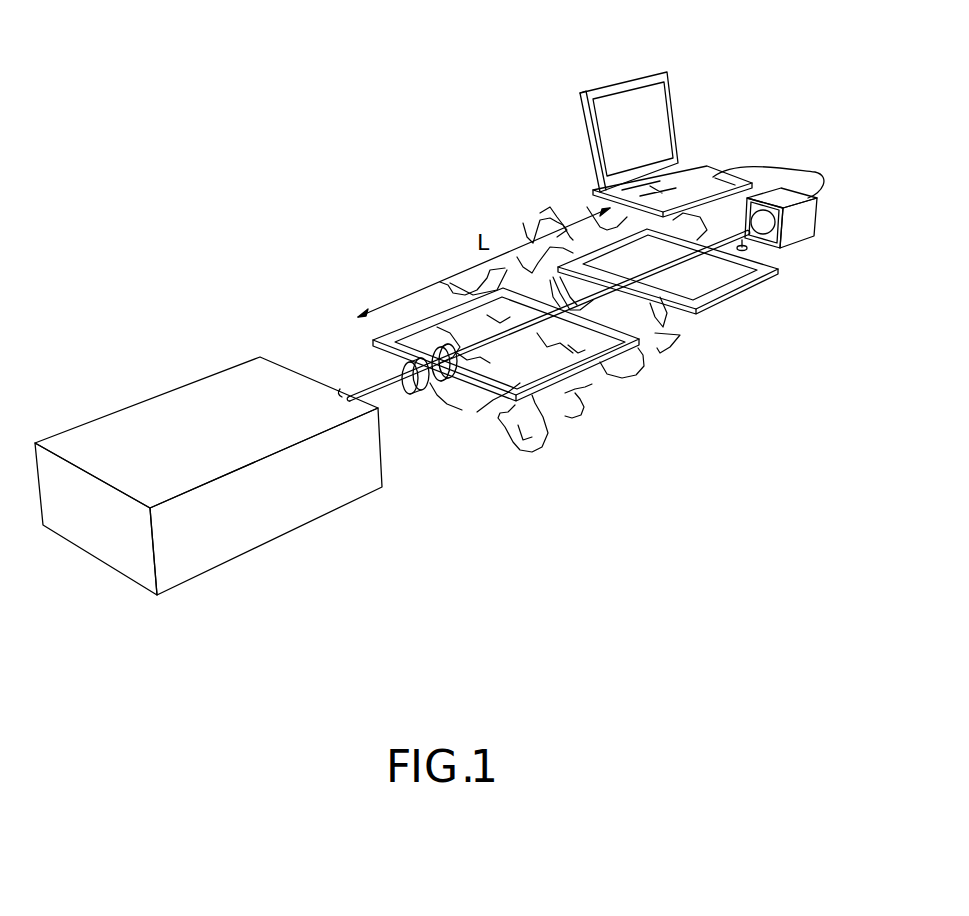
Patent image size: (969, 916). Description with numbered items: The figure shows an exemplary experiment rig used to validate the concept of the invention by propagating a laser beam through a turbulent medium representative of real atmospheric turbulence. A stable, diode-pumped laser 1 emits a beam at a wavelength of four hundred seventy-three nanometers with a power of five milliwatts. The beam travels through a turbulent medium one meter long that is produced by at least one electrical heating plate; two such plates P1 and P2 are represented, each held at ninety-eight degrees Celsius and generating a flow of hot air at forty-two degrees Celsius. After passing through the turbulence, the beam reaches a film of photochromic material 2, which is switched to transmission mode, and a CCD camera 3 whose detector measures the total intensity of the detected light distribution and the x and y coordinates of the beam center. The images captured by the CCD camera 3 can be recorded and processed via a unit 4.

The laser 1 is at (165, 418).
The film of photochromic material 2 is at (773, 248).
The CCD camera 3 is at (818, 210).
The unit 4 is at (623, 110).
The electrical heating plate P1 is at (585, 412).
The electrical heating plate P2 is at (753, 288).